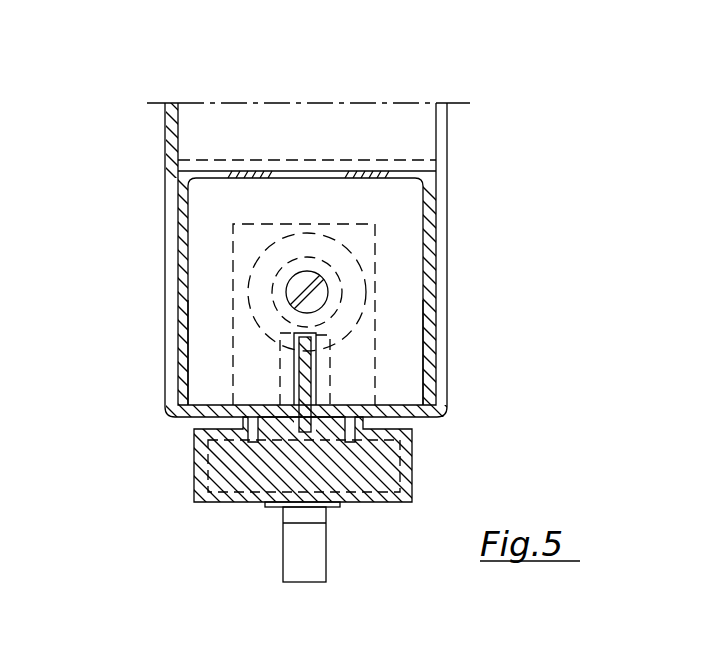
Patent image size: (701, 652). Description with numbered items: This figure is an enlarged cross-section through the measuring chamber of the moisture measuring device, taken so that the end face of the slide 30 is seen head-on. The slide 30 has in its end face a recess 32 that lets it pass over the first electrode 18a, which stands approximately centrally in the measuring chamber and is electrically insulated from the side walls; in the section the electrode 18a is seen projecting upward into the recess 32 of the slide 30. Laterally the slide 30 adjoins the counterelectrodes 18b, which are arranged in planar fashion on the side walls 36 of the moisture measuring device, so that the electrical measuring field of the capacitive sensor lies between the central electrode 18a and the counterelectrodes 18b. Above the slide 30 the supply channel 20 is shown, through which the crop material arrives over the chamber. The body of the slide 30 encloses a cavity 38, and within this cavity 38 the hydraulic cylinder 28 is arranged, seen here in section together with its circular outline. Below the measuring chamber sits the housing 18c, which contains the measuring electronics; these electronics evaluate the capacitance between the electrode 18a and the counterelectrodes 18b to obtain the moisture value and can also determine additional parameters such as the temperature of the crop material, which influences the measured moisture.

The supply channel 20 is at (377, 137).
The slide 30 is at (397, 213).
The cavity 38 is at (248, 249).
The side walls 36 is at (442, 228).
The hydraulic cylinder 28 is at (350, 303).
The recess 32 is at (295, 335).
The counterelectrode 18b is at (437, 327).
The first electrode 18a is at (298, 398).
The housing 18c is at (365, 455).